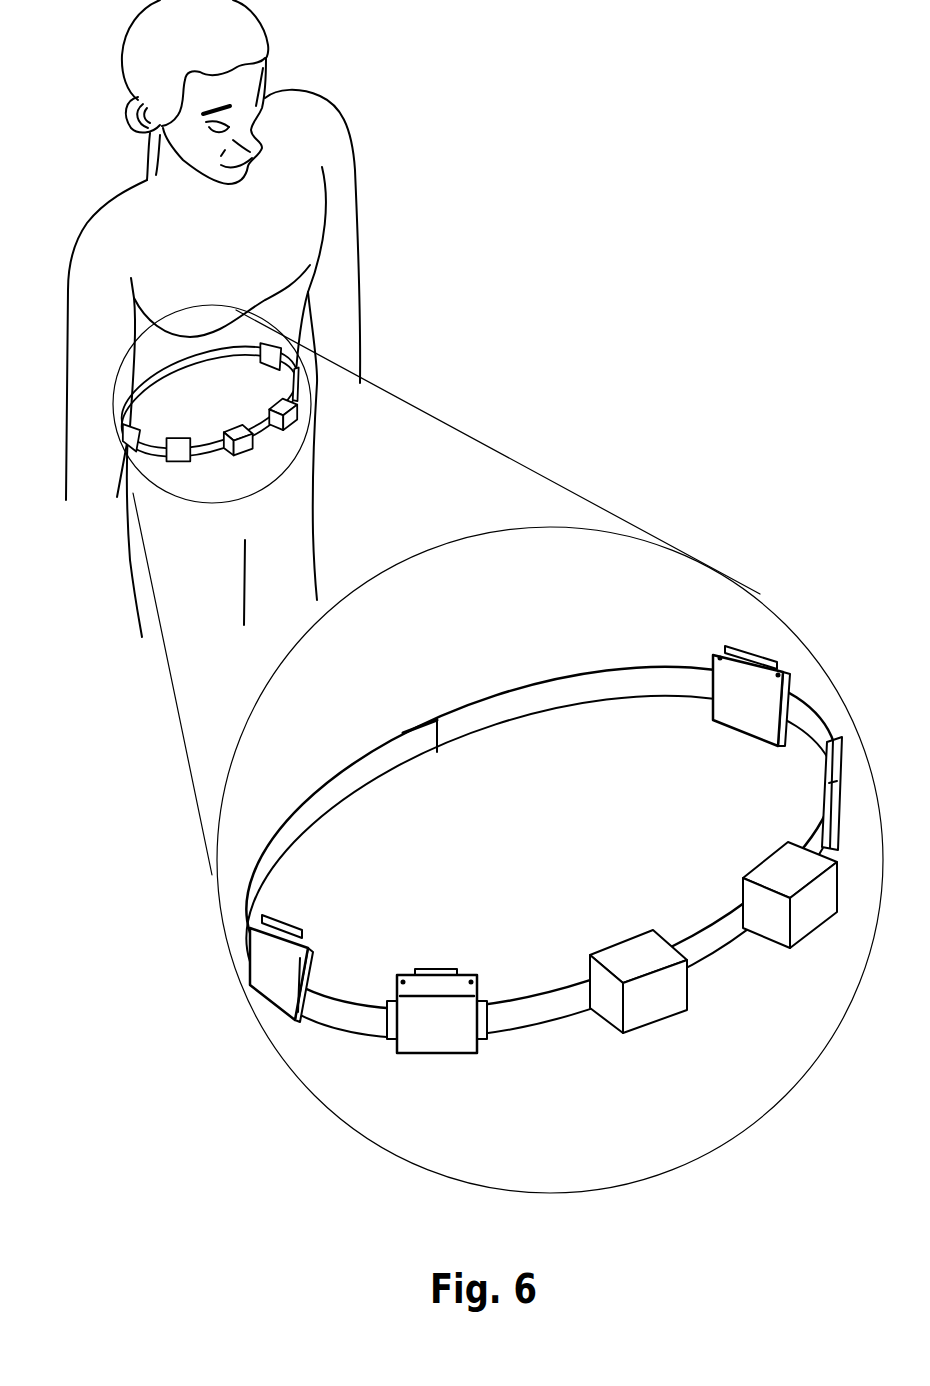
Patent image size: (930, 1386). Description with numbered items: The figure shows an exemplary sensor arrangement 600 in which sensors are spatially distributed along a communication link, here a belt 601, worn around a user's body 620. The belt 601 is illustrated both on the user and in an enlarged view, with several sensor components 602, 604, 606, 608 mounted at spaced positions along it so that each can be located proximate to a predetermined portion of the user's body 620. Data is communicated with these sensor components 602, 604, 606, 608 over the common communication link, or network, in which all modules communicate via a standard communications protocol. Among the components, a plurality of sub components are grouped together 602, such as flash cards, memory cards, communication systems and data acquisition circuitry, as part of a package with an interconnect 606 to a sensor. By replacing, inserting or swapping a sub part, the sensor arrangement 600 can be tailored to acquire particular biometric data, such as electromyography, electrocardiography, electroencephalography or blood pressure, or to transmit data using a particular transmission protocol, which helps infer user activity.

The sensor arrangement 600 is at (716, 248).
The belt 601 is at (548, 682).
The grouped sub components 602 is at (417, 970).
The sensor component 604 is at (298, 940).
The interconnect 606 is at (712, 725).
The sensor component 608 is at (822, 793).
The user's body 620 is at (334, 422).